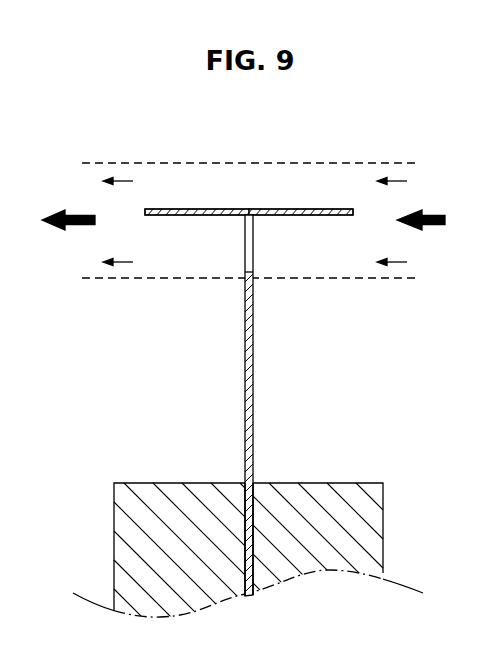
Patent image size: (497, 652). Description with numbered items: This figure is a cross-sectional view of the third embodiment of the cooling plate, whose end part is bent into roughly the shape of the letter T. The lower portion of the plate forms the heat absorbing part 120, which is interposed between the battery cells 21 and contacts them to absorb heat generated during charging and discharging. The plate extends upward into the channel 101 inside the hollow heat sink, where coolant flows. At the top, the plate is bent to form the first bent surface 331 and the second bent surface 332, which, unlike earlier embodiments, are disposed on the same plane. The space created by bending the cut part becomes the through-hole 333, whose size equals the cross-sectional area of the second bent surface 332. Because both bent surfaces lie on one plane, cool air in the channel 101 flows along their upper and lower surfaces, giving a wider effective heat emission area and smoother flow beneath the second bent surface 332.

The channel 101 is at (352, 181).
The first bent surface 331 is at (145, 203).
The second bent surface 332 is at (353, 203).
The through-hole 333 is at (254, 250).
The heat absorbing part 120 is at (254, 518).
The battery cell 21 is at (347, 494).